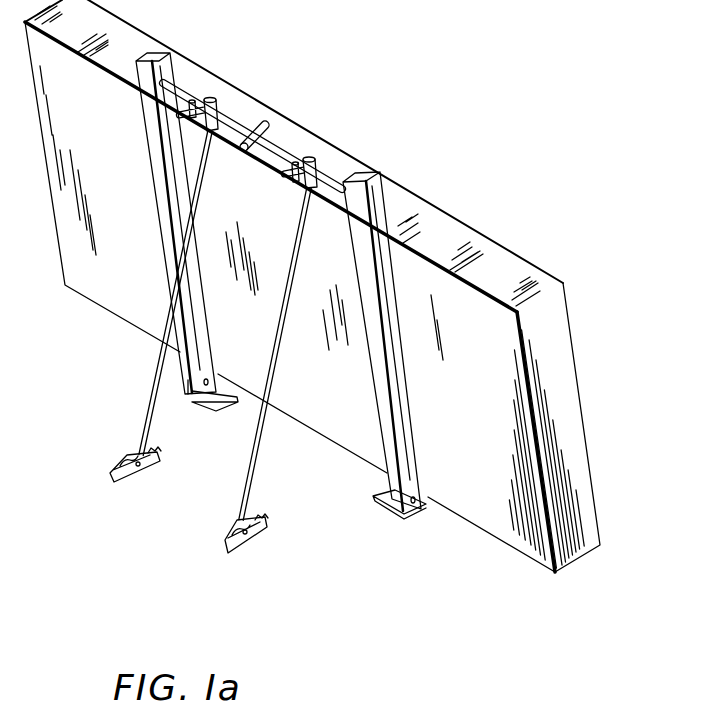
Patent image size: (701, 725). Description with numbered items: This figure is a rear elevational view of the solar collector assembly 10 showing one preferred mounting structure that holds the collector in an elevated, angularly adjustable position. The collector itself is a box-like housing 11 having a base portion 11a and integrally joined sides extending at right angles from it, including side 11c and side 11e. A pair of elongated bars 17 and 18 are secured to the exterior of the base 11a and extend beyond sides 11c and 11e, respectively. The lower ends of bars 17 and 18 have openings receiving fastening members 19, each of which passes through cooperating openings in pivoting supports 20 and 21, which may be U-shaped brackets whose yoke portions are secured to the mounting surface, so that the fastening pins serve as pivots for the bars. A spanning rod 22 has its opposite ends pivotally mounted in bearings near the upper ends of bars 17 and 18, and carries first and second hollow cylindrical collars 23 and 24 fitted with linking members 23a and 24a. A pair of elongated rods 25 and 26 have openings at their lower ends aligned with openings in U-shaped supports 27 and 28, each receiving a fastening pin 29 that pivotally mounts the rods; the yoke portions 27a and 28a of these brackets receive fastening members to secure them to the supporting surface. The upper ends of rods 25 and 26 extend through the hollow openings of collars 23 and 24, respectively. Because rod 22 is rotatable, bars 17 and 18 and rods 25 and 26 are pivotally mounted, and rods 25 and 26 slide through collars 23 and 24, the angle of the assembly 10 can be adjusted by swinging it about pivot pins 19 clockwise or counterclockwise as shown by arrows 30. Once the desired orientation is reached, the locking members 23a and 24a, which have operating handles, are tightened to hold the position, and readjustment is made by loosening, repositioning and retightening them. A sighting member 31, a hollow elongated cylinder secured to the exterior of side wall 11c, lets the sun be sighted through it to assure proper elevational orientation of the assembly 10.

The collector assembly 10 is at (346, 324).
The box-like housing 11 is at (563, 579).
The base portion 11a is at (312, 414).
The side 11c is at (440, 222).
The side 11e is at (590, 555).
The elongated bar 17 is at (163, 210).
The elongated bar 18 is at (378, 377).
The fastening member 19 is at (205, 318).
The pivoting support 20 is at (213, 402).
The pivoting support 21 is at (382, 508).
The spanning rod 22 is at (247, 118).
The first hollow cylindrical collar 23 is at (208, 98).
The linking member 23a is at (187, 107).
The second hollow cylindrical collar 24 is at (320, 160).
The linking member 24a is at (287, 158).
The elongated rod 25 is at (148, 385).
The elongated rod 26 is at (253, 453).
The U-shaped support 27 is at (112, 490).
The yoke portion 27a is at (115, 487).
The U-shaped support 28 is at (220, 559).
The yoke portion 28a is at (227, 553).
The fastening pin 29 is at (140, 466).
The arrows 30 is at (620, 401).
The sighting member 31 is at (250, 146).